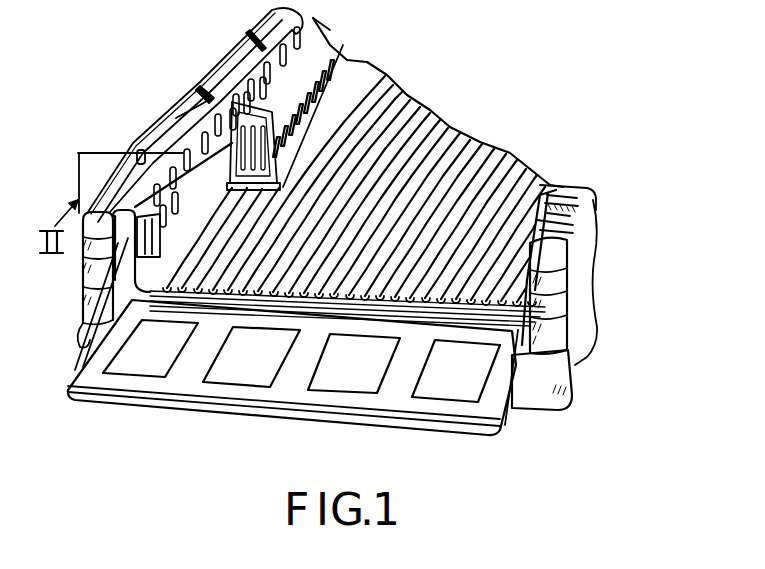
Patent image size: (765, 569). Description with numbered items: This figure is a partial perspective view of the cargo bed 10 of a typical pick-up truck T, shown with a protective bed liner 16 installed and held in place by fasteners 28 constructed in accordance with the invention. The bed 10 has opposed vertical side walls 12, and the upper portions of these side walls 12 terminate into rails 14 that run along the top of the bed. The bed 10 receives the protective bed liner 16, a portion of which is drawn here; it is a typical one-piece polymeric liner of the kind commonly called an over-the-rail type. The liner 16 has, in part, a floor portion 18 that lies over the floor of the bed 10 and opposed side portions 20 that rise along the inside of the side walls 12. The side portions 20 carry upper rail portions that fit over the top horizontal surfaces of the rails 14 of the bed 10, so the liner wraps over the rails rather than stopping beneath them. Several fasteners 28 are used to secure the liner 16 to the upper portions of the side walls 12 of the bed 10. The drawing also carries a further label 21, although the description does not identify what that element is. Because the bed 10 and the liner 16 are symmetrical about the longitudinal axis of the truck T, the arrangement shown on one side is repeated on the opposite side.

The bed 10 is at (512, 168).
The side walls 12 is at (143, 143).
The rails 14 is at (200, 97).
The protective bed liner 16 is at (393, 95).
The floor portion 18 is at (280, 295).
The side portions 20 is at (83, 292).
The end caps 21 is at (258, 32).
The fasteners 28 is at (140, 157).
The pick-up truck T is at (455, 108).